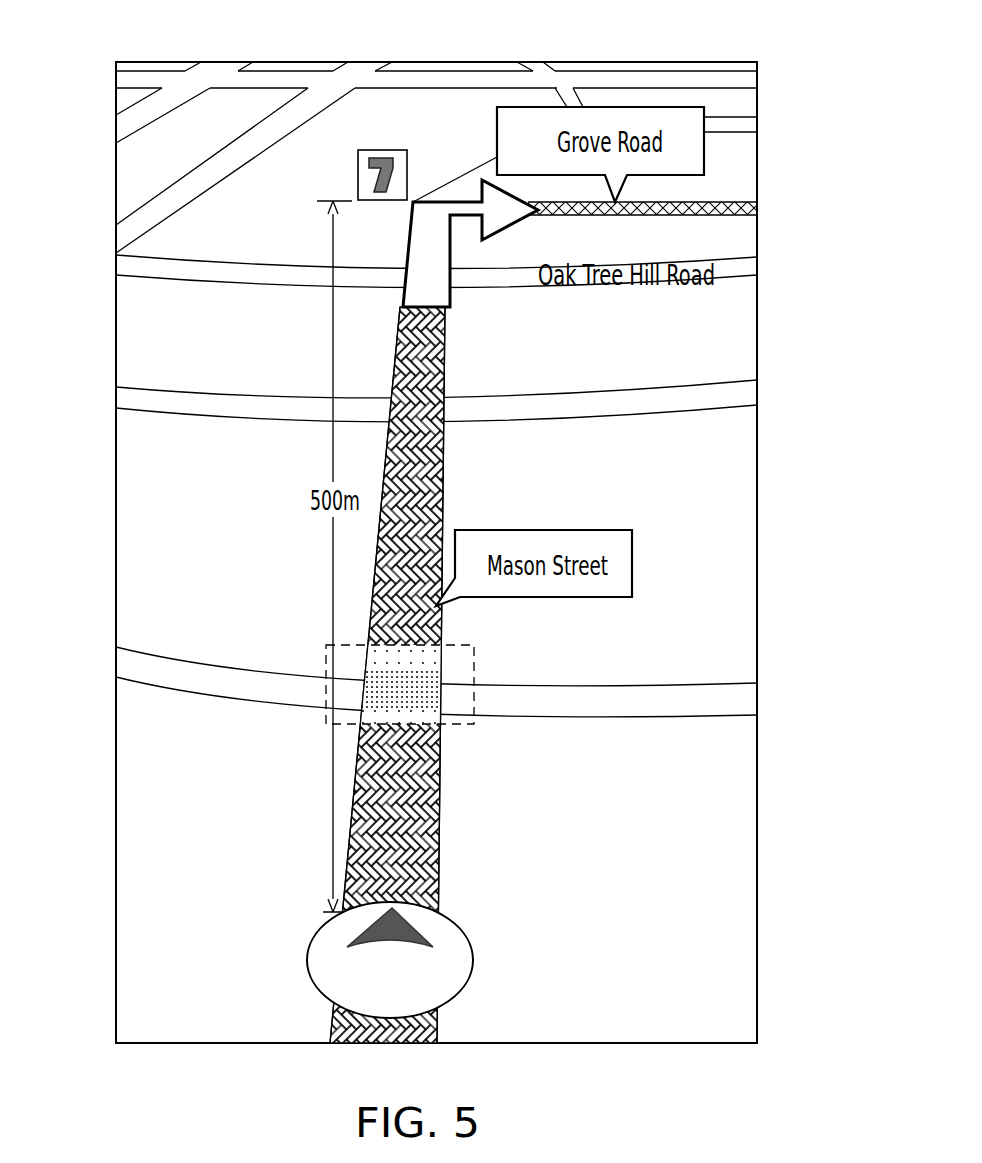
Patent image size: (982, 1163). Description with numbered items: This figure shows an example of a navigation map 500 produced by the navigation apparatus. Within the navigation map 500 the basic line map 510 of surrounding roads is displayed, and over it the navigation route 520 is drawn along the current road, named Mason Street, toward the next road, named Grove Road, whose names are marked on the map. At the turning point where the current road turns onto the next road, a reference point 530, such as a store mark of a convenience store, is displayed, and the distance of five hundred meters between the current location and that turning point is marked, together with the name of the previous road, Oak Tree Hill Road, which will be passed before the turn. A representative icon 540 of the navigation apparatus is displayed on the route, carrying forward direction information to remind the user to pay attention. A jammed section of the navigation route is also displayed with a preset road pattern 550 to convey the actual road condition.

The navigation map 500 is at (757, 350).
The basic line map 510 is at (190, 191).
The navigation route 520 is at (757, 208).
The reference point 530 is at (382, 148).
The representative icon 540 is at (473, 960).
The intersection region 550 is at (327, 662).